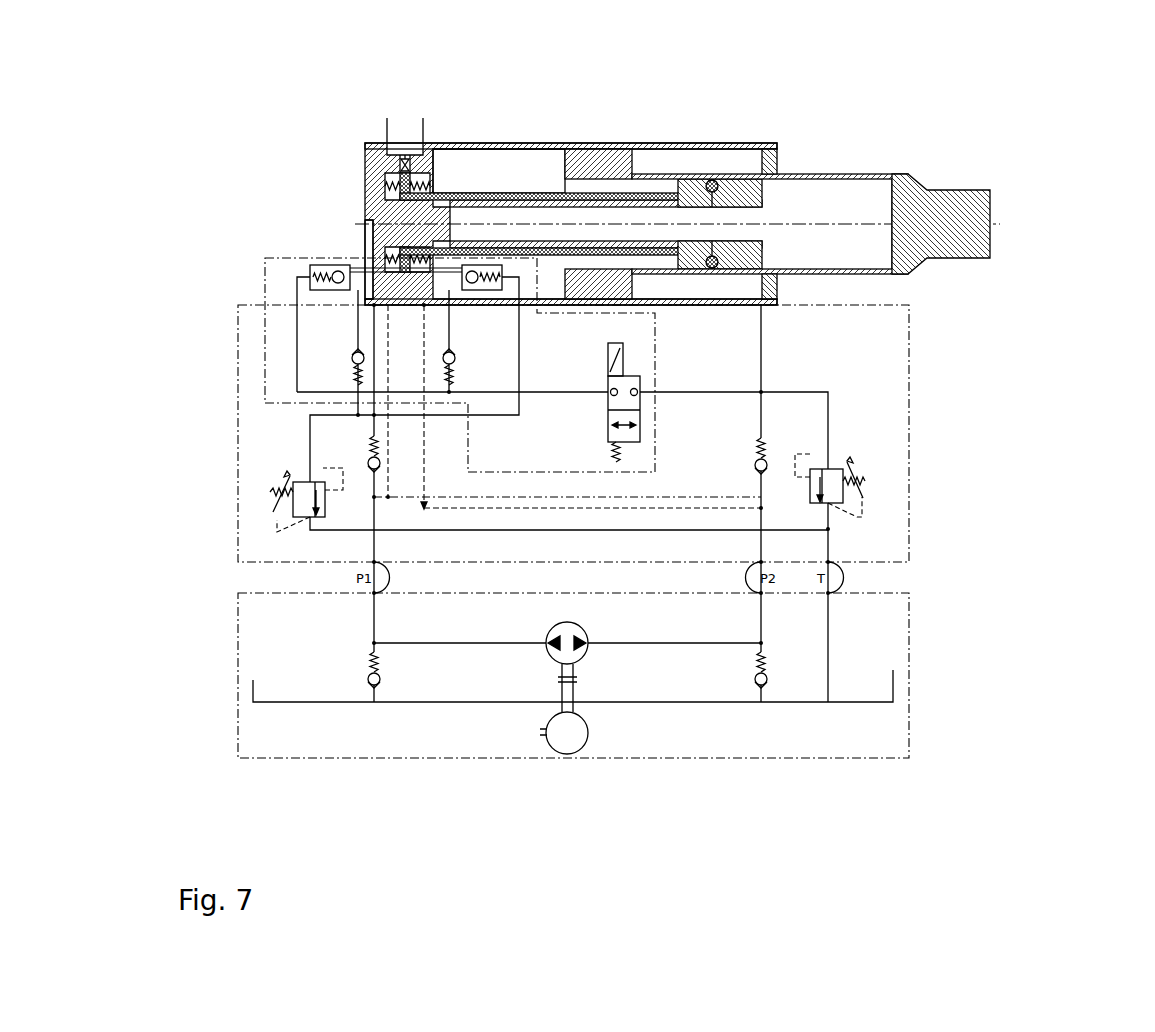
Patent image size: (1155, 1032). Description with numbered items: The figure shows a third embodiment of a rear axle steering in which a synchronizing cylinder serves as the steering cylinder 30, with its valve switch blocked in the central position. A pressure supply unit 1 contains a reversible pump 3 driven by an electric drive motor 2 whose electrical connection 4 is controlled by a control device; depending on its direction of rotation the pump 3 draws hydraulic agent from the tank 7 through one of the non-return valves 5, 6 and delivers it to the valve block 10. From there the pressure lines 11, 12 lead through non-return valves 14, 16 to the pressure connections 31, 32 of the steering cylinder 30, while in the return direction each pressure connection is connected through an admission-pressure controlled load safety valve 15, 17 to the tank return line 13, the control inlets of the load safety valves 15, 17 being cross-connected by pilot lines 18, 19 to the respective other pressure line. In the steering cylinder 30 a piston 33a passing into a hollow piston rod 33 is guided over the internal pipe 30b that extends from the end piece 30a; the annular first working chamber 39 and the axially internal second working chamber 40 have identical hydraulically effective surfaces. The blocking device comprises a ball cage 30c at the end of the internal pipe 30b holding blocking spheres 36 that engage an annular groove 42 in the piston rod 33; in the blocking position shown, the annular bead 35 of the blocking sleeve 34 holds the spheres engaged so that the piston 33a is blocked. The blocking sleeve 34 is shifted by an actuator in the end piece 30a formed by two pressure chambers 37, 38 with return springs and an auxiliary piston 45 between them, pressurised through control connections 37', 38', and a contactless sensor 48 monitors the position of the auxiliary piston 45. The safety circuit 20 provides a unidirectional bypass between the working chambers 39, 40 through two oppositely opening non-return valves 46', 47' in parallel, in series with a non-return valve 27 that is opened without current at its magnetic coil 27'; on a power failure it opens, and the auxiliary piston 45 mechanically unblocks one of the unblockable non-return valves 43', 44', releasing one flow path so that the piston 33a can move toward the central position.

The pressure supply unit 1 is at (252, 624).
The electric drive motor 2 is at (567, 745).
The reversible pump 3 is at (570, 635).
The electrical connection 4 is at (518, 733).
The non-return valve 5 is at (370, 676).
The non-return valve 6 is at (765, 682).
The tank 7 is at (867, 678).
The valve block 10 is at (880, 345).
The pressure line 11 is at (373, 562).
The pressure line 12 is at (763, 520).
The tank return line 13 is at (828, 552).
The non-return valve 14 is at (367, 462).
The load safety valve 15 is at (308, 498).
The non-return valve 16 is at (768, 452).
The load safety valve 17 is at (833, 477).
The pilot line 18 is at (425, 510).
The pilot line 19 is at (500, 510).
The safety circuit 20 is at (645, 329).
The non-return valve 27 is at (863, 405).
The valve actuator 27' is at (865, 366).
The steering cylinder 30 is at (367, 143).
The end piece 30a is at (372, 168).
The internal pipe 30b is at (497, 205).
The ball cage 30c is at (586, 400).
The first pressure connection 31 is at (365, 228).
The second pressure connection 32 is at (778, 297).
The piston rod 33 is at (833, 175).
The piston 33a is at (635, 145).
The blocking sleeve 34 is at (533, 192).
The annular bead 35 is at (688, 180).
The guide 36 is at (763, 173).
The pressure chamber 37 is at (451, 111).
The control connection 37' is at (454, 303).
The pressure chamber 38 is at (294, 230).
The control connection 38' is at (345, 259).
The first working chamber 39 is at (652, 167).
The second working chamber 40 is at (882, 213).
The annular groove 42 is at (715, 180).
The unblockable non-return valve 43' is at (216, 272).
The unblockable non-return valve 44' is at (292, 295).
The auxiliary piston 45 is at (387, 178).
The non-return valve 46' is at (268, 341).
The non-return valve 47' is at (223, 352).
The contactless sensor 48 is at (398, 147).